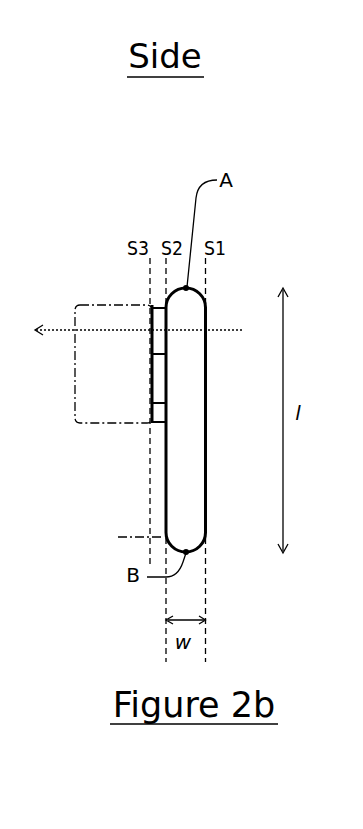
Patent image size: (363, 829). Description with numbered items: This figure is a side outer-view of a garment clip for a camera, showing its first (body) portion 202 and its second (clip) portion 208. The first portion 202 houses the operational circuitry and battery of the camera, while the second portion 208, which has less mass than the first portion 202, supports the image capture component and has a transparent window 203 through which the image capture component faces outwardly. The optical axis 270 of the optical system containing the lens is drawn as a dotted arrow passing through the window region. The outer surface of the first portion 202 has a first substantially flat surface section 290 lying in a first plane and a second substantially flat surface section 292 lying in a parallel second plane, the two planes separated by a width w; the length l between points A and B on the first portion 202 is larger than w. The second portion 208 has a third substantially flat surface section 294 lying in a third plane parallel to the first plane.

The first (body) portion 202 is at (205, 493).
The transparent window 203 is at (148, 320).
The second (clip) portion 208 is at (150, 396).
The optical axis 270 is at (134, 319).
The first substantially flat surface section 290 is at (208, 305).
The second substantially flat surface section 292 is at (127, 308).
The third substantially flat surface section 294 is at (73, 305).